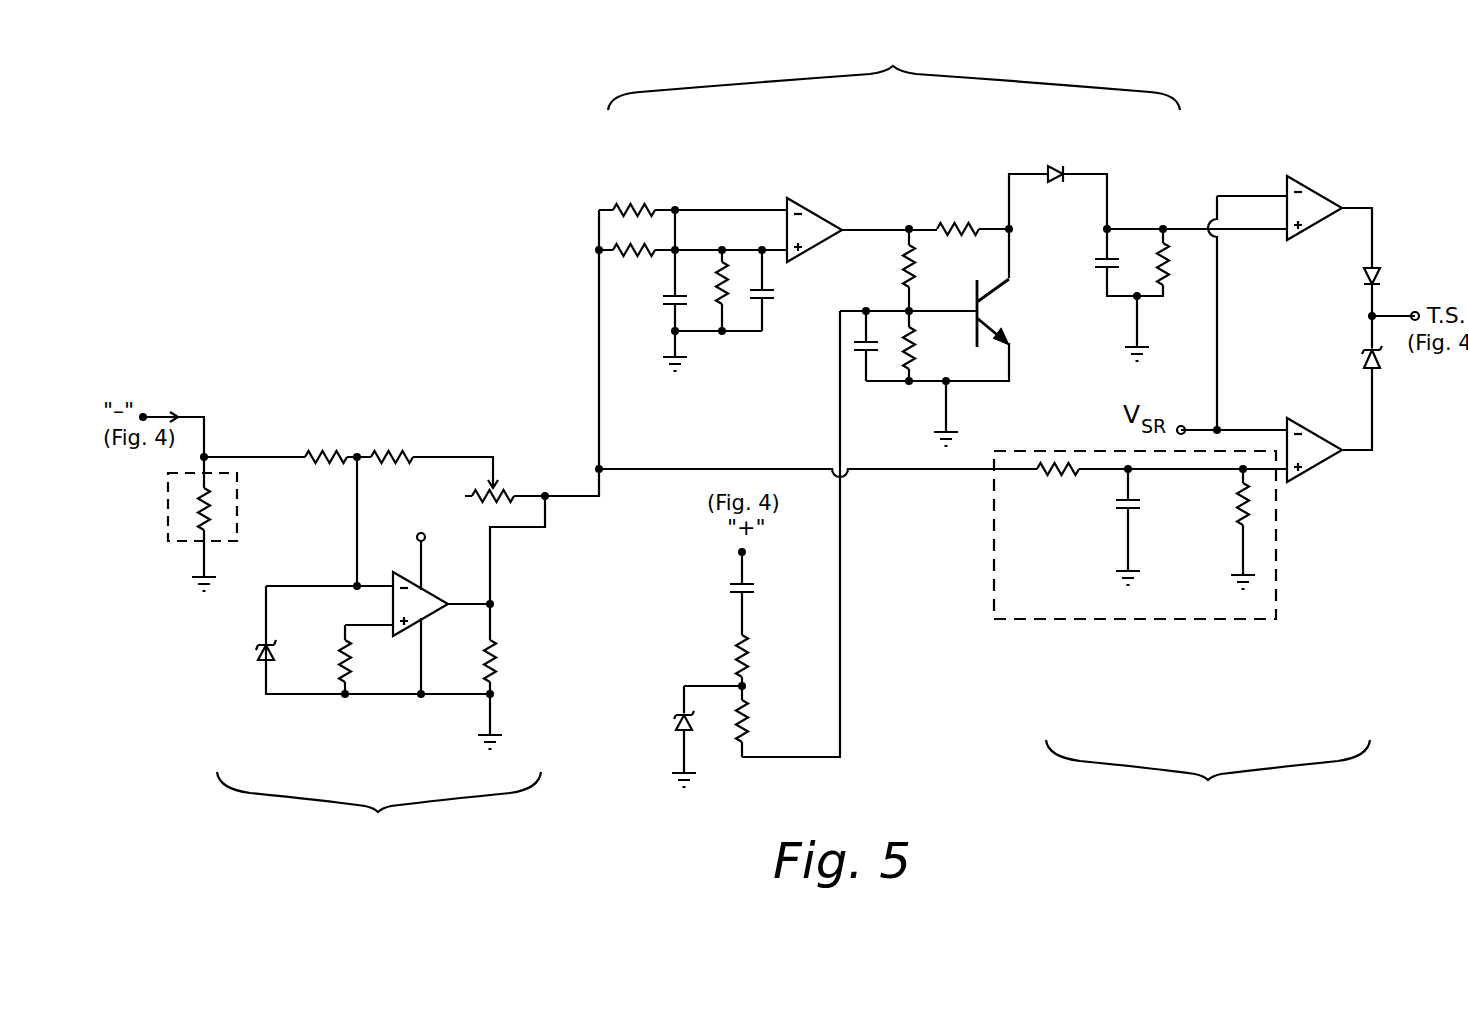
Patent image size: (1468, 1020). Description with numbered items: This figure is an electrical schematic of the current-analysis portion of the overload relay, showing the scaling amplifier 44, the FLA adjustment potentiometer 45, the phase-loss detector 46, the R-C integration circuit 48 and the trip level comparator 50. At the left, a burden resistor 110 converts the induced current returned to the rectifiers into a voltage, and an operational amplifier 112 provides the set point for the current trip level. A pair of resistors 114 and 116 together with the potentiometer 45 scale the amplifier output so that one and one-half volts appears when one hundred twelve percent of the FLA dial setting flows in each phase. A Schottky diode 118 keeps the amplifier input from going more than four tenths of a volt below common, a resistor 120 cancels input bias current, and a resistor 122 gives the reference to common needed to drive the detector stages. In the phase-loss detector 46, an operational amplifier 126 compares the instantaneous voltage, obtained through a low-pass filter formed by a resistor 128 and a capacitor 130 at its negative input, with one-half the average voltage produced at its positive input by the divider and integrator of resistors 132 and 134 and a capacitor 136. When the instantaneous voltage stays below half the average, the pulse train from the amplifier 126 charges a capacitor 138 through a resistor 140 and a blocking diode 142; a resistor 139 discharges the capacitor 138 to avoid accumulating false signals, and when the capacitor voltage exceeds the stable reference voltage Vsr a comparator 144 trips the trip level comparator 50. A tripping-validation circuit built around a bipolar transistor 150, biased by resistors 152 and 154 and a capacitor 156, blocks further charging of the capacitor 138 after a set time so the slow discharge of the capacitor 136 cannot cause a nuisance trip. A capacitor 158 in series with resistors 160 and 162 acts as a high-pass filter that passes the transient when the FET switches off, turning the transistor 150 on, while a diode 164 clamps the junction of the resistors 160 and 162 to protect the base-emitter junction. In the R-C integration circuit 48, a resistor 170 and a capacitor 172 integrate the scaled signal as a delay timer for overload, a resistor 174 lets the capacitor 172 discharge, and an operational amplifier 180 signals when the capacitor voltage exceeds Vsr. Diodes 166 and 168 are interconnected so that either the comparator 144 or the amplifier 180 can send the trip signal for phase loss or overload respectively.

The scaling amplifier 44 is at (392, 843).
The FLA adjustment potentiometer 45 is at (508, 481).
The phase-loss detector 46 is at (894, 73).
The R-C integration circuit 48 is at (1080, 620).
The trip level comparator 50 is at (1222, 810).
The burden resistor 110 is at (236, 507).
The operational amplifier 112 is at (430, 591).
The resistor 114 is at (333, 449).
The resistor 116 is at (398, 448).
The Schottky diode 118 is at (254, 656).
The resistor 120 is at (336, 661).
The resistor 122 is at (503, 660).
The operational amplifier 126 is at (812, 212).
The resistor 128 is at (638, 202).
The capacitor 130 is at (664, 309).
The resistor 132 is at (648, 262).
The resistor 134 is at (712, 298).
The capacitor 136 is at (773, 303).
The capacitor 138 is at (1092, 262).
The resistor 139 is at (1172, 282).
The resistor 140 is at (946, 220).
The blocking diode 142 is at (1060, 158).
The comparator 144 is at (1320, 190).
The bipolar transistor 150 is at (992, 318).
The resistor 152 is at (900, 263).
The resistor 154 is at (918, 342).
The capacitor 156 is at (854, 358).
The capacitor 158 is at (756, 590).
The resistor 160 is at (758, 658).
The resistor 162 is at (756, 720).
The diode 164 is at (672, 716).
The diode 166 is at (1360, 362).
The diode 168 is at (1360, 272).
The resistor 170 is at (1060, 480).
The capacitor 172 is at (1118, 512).
The resistor 174 is at (1232, 507).
The operational amplifier 180 is at (1322, 473).